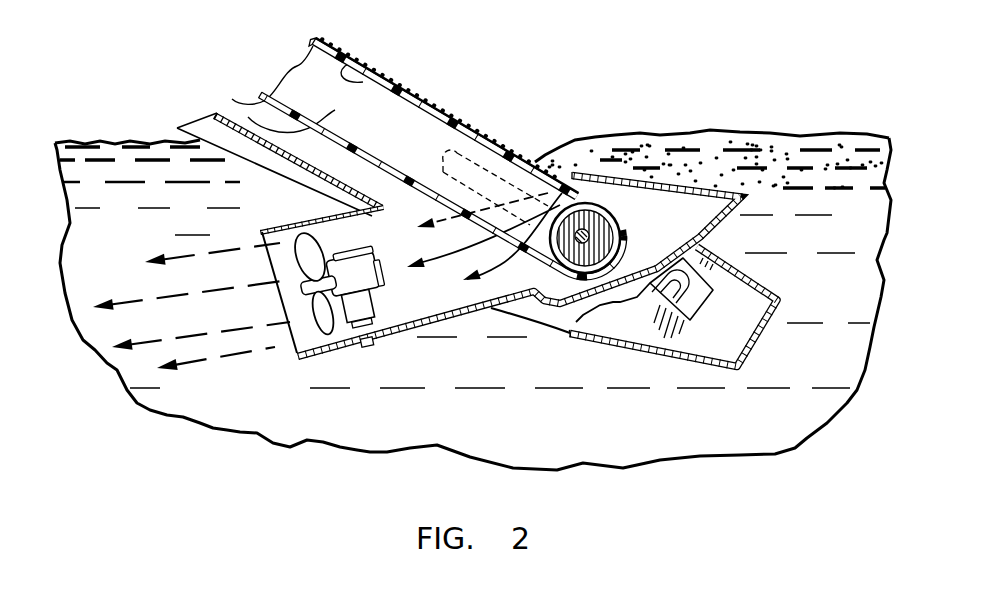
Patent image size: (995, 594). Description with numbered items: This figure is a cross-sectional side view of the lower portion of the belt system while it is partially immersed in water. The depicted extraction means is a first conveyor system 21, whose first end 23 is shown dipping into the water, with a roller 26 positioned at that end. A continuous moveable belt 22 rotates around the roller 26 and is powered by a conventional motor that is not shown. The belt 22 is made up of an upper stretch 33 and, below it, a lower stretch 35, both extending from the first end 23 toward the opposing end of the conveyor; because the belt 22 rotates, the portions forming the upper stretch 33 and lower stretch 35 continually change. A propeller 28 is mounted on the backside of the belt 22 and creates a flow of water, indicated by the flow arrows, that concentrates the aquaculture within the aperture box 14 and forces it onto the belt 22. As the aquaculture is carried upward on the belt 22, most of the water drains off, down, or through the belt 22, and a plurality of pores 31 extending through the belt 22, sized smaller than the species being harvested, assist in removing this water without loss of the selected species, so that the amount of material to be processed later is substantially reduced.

The aperture box 14 is at (745, 188).
The first conveyor system 21 is at (444, 104).
The continuous moveable belt 22 is at (443, 112).
The first end 23 is at (618, 228).
The roller 26 is at (597, 220).
The propeller 28 is at (313, 318).
The pores 31 is at (370, 78).
The upper stretch 33 is at (413, 93).
The lower stretch 35 is at (250, 115).